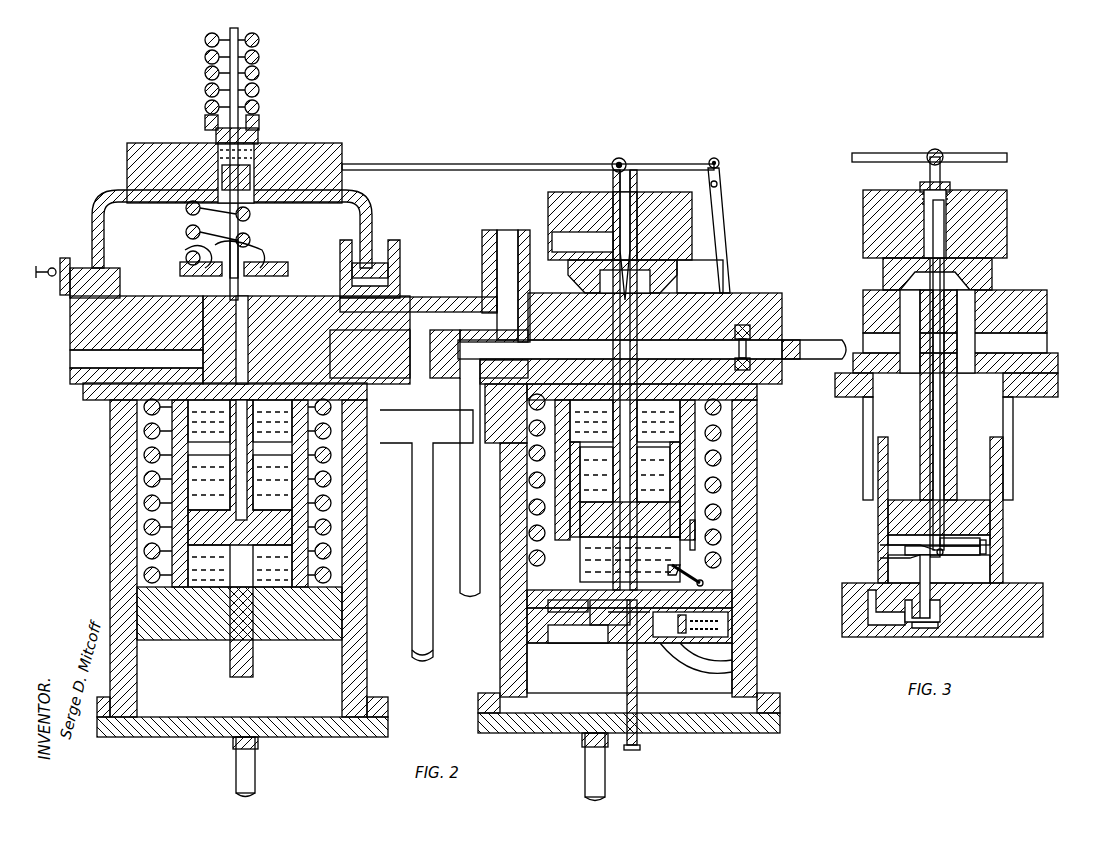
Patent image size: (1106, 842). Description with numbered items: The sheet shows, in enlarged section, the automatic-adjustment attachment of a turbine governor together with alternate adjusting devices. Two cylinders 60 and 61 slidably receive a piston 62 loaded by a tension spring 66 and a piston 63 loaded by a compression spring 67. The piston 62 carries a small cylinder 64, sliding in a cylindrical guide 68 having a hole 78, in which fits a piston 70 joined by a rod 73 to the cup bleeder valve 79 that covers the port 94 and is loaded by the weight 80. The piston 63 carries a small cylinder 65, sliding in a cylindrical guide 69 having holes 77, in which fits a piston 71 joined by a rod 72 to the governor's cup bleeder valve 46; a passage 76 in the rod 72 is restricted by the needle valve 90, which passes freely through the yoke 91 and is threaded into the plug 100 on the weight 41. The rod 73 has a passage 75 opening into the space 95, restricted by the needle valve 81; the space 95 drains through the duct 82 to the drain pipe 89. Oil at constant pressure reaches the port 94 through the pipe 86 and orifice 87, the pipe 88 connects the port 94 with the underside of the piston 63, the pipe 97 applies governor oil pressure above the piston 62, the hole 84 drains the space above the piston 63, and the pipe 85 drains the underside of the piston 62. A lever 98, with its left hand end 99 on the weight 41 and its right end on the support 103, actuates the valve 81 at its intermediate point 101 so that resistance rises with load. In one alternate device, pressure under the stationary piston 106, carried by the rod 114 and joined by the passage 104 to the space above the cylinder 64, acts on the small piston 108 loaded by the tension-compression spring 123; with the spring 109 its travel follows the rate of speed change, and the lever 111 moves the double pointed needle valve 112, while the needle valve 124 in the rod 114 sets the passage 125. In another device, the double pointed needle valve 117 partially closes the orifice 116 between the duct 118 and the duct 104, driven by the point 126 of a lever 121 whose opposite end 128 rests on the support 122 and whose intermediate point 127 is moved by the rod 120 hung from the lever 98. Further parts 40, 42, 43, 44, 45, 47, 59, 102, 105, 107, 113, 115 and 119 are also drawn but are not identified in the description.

In FIG. 2, the spring 40 is at (258, 92).
In FIG. 2, the weight 41 is at (298, 143).
In FIG. 2, the plug 42 is at (380, 270).
In FIG. 2, the cap 43 is at (400, 252).
In FIG. 2, the vent fitting 44 is at (55, 290).
In FIG. 2, the cover 45 is at (262, 240).
In FIG. 2, the cup bleeder valve 46 is at (258, 268).
In FIG. 2, the upper body plate 47 is at (200, 338).
In FIG. 2, the passage 59 is at (90, 360).
In FIG. 2, the cylinder 60 is at (682, 558).
In FIG. 2, the cylinder 61 is at (364, 670).
In FIG. 2, the piston 62 is at (742, 580).
In FIG. 3, the piston 62 is at (1043, 596).
In FIG. 2, the piston 63 is at (330, 615).
In FIG. 2, the small cylinder 64 is at (700, 515).
In FIG. 3, the small cylinder 64 is at (985, 520).
In FIG. 2, the small cylinder 65 is at (315, 522).
In FIG. 2, the tension spring 66 is at (700, 532).
In FIG. 2, the compression spring 67 is at (332, 558).
In FIG. 2, the cylindrical guide 68 is at (662, 470).
In FIG. 3, the cylindrical guide 68 is at (1003, 440).
In FIG. 2, the cylindrical guide 69 is at (175, 490).
In FIG. 2, the piston 70 is at (690, 498).
In FIG. 3, the piston 70 is at (990, 505).
In FIG. 2, the piston 71 is at (160, 530).
In FIG. 2, the rod 72 is at (122, 468).
In FIG. 2, the rod 73 is at (668, 482).
In FIG. 3, the rod 73 is at (960, 472).
In FIG. 2, the passage 75 is at (700, 440).
In FIG. 2, the passage 76 is at (180, 505).
In FIG. 2, the holes 77 is at (150, 435).
In FIG. 3, the holes 77 is at (1015, 407).
In FIG. 2, the hole 78 is at (722, 415).
In FIG. 2, the cup bleeder valve 79 is at (680, 272).
In FIG. 3, the cup bleeder valve 79 is at (995, 270).
In FIG. 2, the weight 80 is at (700, 206).
In FIG. 3, the weight 80 is at (1010, 210).
In FIG. 2, the needle valve 81 is at (640, 252).
In FIG. 2, the duct 82 is at (505, 240).
In FIG. 2, the hole 84 is at (372, 432).
In FIG. 2, the pipe 85 is at (473, 440).
In FIG. 2, the pipe 86 is at (808, 340).
In FIG. 2, the orifice 87 is at (752, 330).
In FIG. 2, the pipe 88 is at (256, 777).
In FIG. 2, the drain pipe 89 is at (425, 660).
In FIG. 2, the needle valve 90 is at (252, 238).
In FIG. 2, the yoke 91 is at (215, 255).
In FIG. 2, the port 94 is at (690, 318).
In FIG. 3, the port 94 is at (965, 310).
In FIG. 2, the space 95 is at (700, 270).
In FIG. 2, the pipe 97 is at (606, 770).
In FIG. 2, the lever 98 is at (466, 166).
In FIG. 3, the lever 98 is at (870, 158).
In FIG. 2, the left hand end of lever 99 is at (262, 160).
In FIG. 2, the plug 100 is at (255, 178).
In FIG. 2, the intermediate point of lever 101 is at (625, 161).
In FIG. 3, the intermediate point of lever 101 is at (940, 152).
In FIG. 2, the pivot 102 is at (719, 162).
In FIG. 2, the support 103 is at (728, 212).
In FIG. 2, the passage 104 is at (590, 608).
In FIG. 3, the passage 104 is at (870, 628).
In FIG. 2, the passage 105 is at (612, 640).
In FIG. 2, the stationary piston 106 is at (722, 606).
In FIG. 2, the passage 107 is at (722, 660).
In FIG. 2, the piston 108 is at (720, 648).
In FIG. 2, the spring 109 is at (722, 636).
In FIG. 2, the lever 111 is at (735, 590).
In FIG. 2, the double pointed needle valve 112 is at (705, 568).
In FIG. 2, the lever 113 is at (690, 552).
In FIG. 2, the rod 114 is at (645, 688).
In FIG. 3, the nut 115 is at (952, 186).
In FIG. 3, the orifice 116 is at (918, 630).
In FIG. 3, the double pointed needle valve 117 is at (935, 645).
In FIG. 3, the duct 118 is at (945, 586).
In FIG. 3, the plate 119 is at (935, 570).
In FIG. 3, the rod 120 is at (940, 430).
In FIG. 3, the lever 121 is at (988, 545).
In FIG. 3, the support 122 is at (980, 540).
In FIG. 2, the tension-compression spring 123 is at (705, 625).
In FIG. 2, the needle valve 124 is at (638, 748).
In FIG. 2, the passage 125 is at (606, 616).
In FIG. 3, the point of lever 126 is at (880, 556).
In FIG. 3, the intermediate point of lever 127 is at (880, 545).
In FIG. 3, the opposite end of lever 128 is at (945, 552).